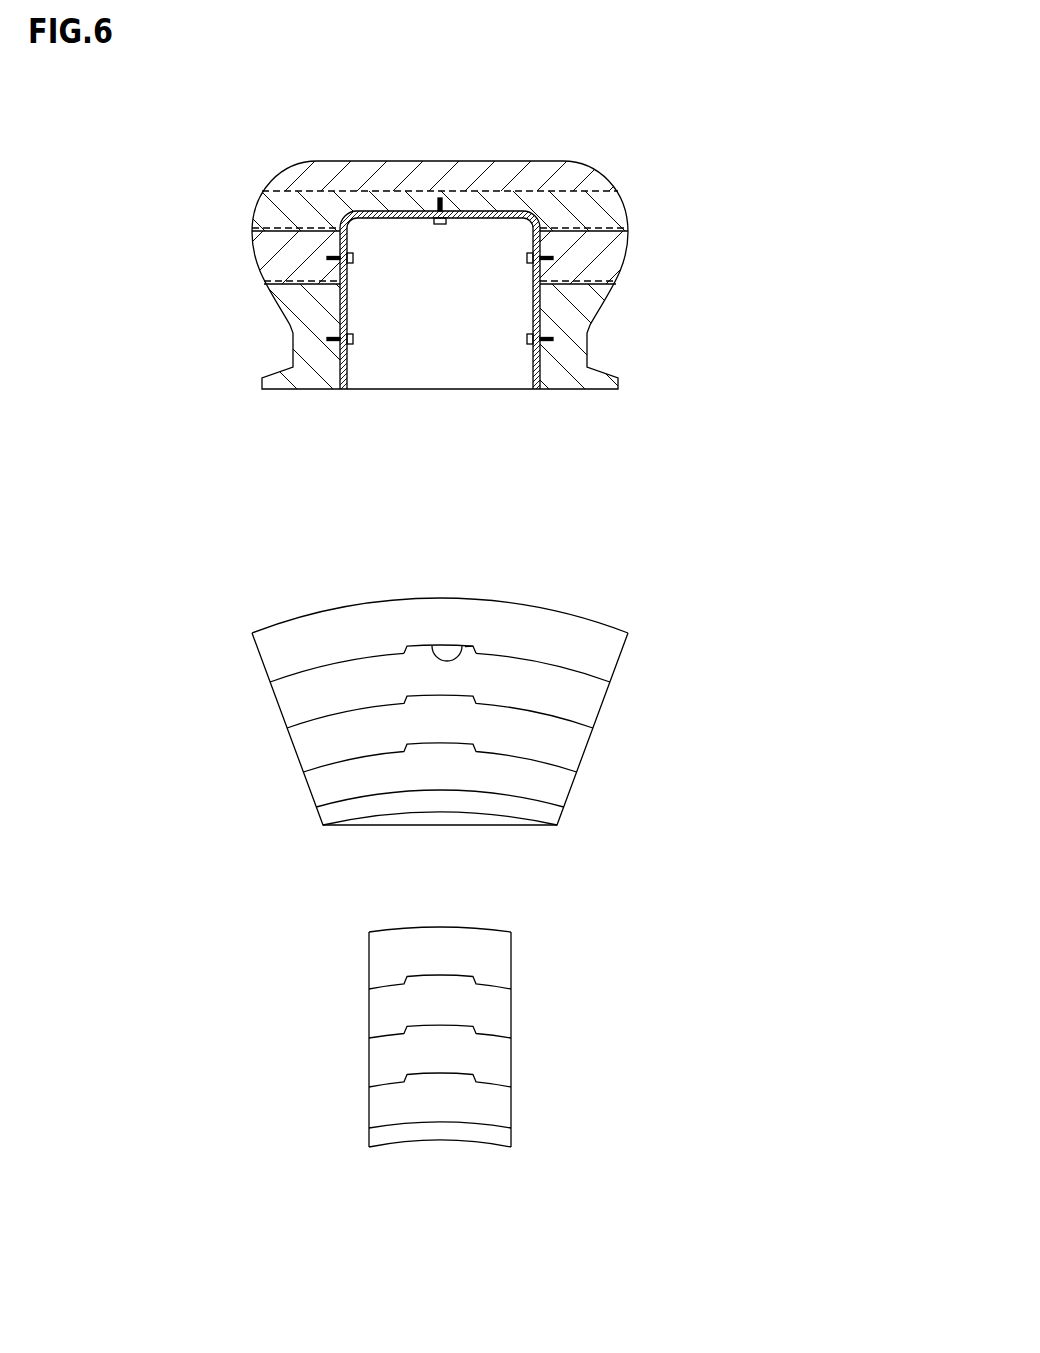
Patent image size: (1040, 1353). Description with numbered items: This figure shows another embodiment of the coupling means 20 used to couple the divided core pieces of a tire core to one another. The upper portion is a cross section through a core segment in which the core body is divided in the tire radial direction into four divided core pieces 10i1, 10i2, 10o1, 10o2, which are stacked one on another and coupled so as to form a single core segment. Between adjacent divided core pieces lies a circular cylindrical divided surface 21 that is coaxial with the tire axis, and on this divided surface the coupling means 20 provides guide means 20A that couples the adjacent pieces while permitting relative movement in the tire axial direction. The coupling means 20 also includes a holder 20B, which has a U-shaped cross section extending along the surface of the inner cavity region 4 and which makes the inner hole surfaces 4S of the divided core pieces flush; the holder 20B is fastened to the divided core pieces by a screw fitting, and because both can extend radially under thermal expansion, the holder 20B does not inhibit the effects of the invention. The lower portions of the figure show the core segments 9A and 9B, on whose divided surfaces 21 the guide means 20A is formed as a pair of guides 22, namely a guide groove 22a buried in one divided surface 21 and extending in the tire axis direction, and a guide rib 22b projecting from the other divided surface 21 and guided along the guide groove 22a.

The inner cavity region 4 is at (470, 332).
The inner hole surface 4S is at (345, 291).
The core segment 9A is at (623, 744).
The core segment 9B is at (613, 1068).
The divided core piece 10o2 is at (290, 187).
The divided core piece 10o1 is at (270, 210).
The divided core piece 10i2 is at (290, 267).
The divided core piece 10i1 is at (310, 343).
The coupling means 20 is at (420, 365).
The guide means 20A is at (563, 190).
The holder 20B is at (347, 367).
The divided surface 21 is at (357, 660).
The pair of guides 22 is at (565, 532).
The guide groove 22a is at (463, 655).
The guide rib 22b is at (440, 647).